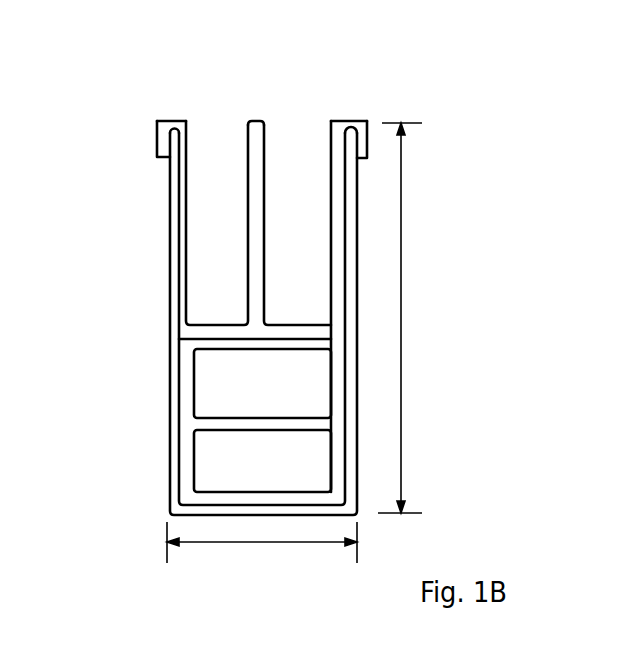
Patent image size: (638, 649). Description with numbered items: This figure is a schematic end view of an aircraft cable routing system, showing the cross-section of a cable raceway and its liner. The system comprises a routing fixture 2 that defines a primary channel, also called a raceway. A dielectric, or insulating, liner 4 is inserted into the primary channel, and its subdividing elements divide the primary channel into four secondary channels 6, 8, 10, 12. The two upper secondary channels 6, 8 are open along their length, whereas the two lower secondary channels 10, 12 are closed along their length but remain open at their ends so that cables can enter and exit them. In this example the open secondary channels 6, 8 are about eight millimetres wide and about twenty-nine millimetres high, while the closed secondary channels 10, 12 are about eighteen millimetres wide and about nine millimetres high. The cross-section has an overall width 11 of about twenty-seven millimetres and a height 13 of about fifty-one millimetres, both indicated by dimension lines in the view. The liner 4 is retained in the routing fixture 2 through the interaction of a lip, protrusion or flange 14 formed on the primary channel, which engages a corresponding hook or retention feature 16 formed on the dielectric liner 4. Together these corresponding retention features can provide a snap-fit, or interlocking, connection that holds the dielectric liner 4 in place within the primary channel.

The routing fixture 2 is at (217, 262).
The dielectric liner 4 is at (190, 133).
The secondary channel 6 is at (222, 233).
The secondary channel 8 is at (299, 233).
The secondary channel 10 is at (281, 388).
The overall width 11 is at (253, 542).
The secondary channel 12 is at (282, 472).
The height 13 is at (401, 243).
The flange 14 is at (170, 135).
The retention feature 16 is at (160, 148).